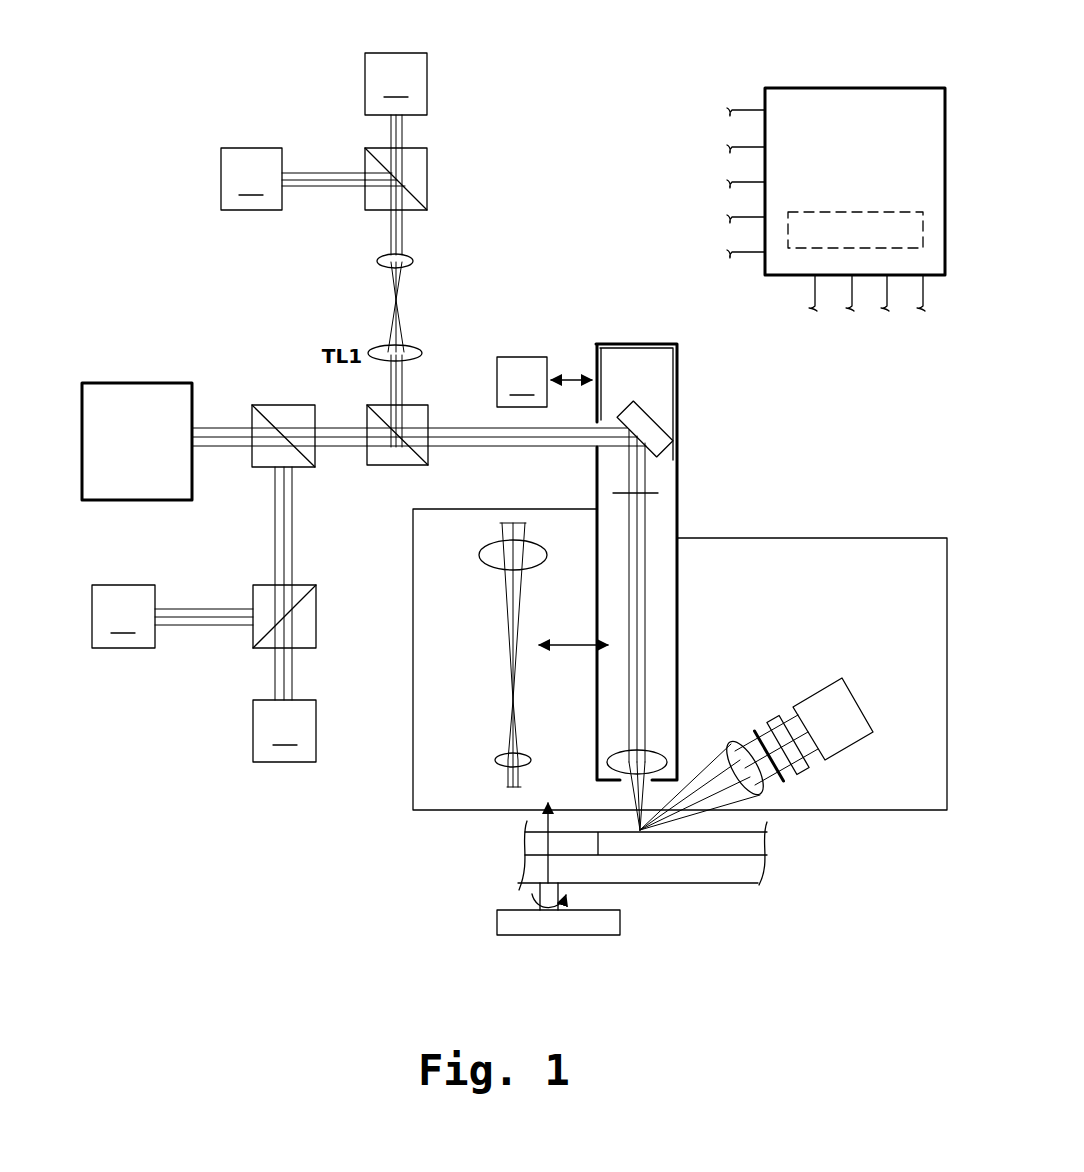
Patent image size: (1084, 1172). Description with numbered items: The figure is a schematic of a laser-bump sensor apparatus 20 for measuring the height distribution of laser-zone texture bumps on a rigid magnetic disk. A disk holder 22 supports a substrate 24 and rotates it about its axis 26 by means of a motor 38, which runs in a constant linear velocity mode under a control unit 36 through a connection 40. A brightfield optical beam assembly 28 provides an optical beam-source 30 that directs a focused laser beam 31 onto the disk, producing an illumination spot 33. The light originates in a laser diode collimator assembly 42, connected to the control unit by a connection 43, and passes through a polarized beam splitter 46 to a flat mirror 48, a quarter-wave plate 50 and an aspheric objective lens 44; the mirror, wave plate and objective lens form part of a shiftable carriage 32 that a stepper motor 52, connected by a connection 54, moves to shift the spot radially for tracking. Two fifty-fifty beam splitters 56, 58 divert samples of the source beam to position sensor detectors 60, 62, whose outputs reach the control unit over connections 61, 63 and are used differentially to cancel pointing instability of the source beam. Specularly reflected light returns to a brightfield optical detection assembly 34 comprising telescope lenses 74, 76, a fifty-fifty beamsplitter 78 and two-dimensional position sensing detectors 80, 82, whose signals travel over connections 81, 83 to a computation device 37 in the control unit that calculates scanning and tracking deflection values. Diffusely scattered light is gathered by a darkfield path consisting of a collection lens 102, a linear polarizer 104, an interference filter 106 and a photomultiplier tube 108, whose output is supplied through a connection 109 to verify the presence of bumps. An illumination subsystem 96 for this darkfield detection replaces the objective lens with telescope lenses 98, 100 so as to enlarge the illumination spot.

The laser-bump sensor apparatus 20 is at (486, 308).
The disk holder 22 is at (746, 884).
The substrate 24 is at (758, 842).
The axis 26 is at (527, 821).
The brightfield optical beam assembly 28 is at (682, 588).
The optical beam-source 30 is at (163, 505).
The focused laser beam 31 is at (634, 801).
The shiftable carriage 32 is at (633, 345).
The illumination spot 33 is at (643, 833).
The brightfield optical detection assembly 34 is at (432, 155).
The control unit 36 is at (874, 86).
The computation device 37 is at (867, 212).
The motor 38 is at (578, 932).
The connection 40 is at (620, 920).
The laser diode collimator assembly 42 is at (167, 391).
The connection 43 is at (192, 487).
The objective lens 44 is at (614, 752).
The polarized beam splitter 46 is at (424, 405).
The flat mirror 48 is at (655, 410).
The quarter-wave plate 50 is at (613, 493).
The stepper motor 52 is at (544, 382).
The connection 54 is at (522, 357).
The beam splitter BS2 56 is at (316, 413).
The beam splitter BS3 58 is at (316, 631).
The position sensor detector PSD3 60 is at (284, 745).
The connection 61 is at (316, 750).
The position sensor detector PSD4 62 is at (123, 605).
The connection 63 is at (155, 640).
The telescope lens TL1 74 is at (405, 336).
The telescope lens TL2 76 is at (413, 259).
The beamsplitter 78 is at (427, 203).
The position sensing detector PSD1 80 is at (396, 72).
The connection 81 is at (427, 82).
The position sensing detector PSD2 82 is at (251, 167).
The connection 83 is at (282, 200).
The illumination subsystem 96 is at (505, 634).
The telescope lens TL3 98 is at (491, 566).
The telescope lens TL4 100 is at (500, 753).
The collection lens 102 is at (732, 742).
The linear polarizer 104 is at (755, 732).
The interference filter 106 is at (808, 773).
The photomultiplier tube 108 is at (849, 703).
The connection 109 is at (818, 688).